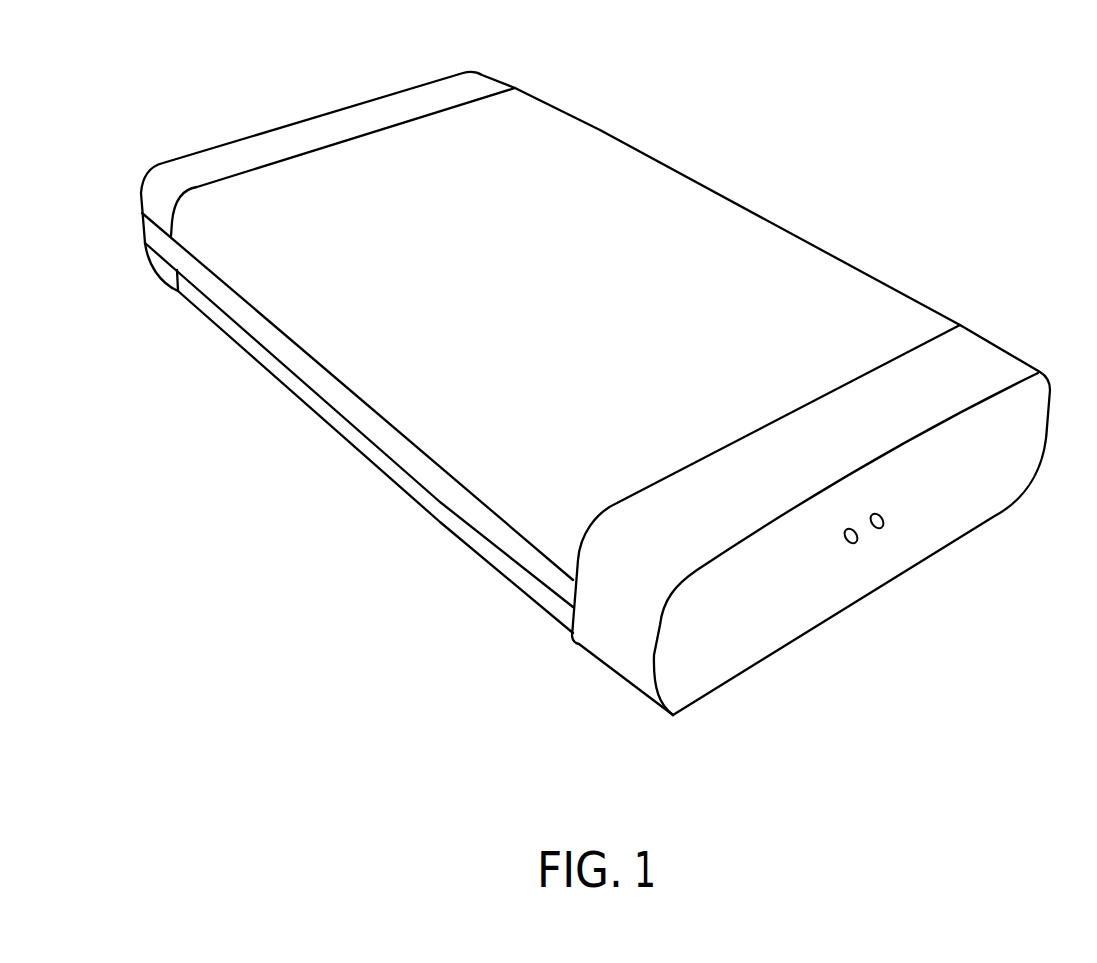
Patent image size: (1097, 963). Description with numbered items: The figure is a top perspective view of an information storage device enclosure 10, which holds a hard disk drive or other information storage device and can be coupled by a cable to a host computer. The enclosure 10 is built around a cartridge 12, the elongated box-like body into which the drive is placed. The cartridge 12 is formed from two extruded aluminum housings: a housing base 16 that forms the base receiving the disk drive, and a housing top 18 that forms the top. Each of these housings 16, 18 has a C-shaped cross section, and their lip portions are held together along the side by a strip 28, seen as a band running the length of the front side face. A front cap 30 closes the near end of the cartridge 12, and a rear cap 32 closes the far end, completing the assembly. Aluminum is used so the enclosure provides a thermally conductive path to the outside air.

The information storage device enclosure 10 is at (603, 409).
The cartridge 12 is at (595, 409).
The housing base 16 is at (490, 553).
The housing top 18 is at (765, 238).
The strip 28 is at (412, 454).
The front cap 30 is at (817, 617).
The rear cap 32 is at (312, 118).